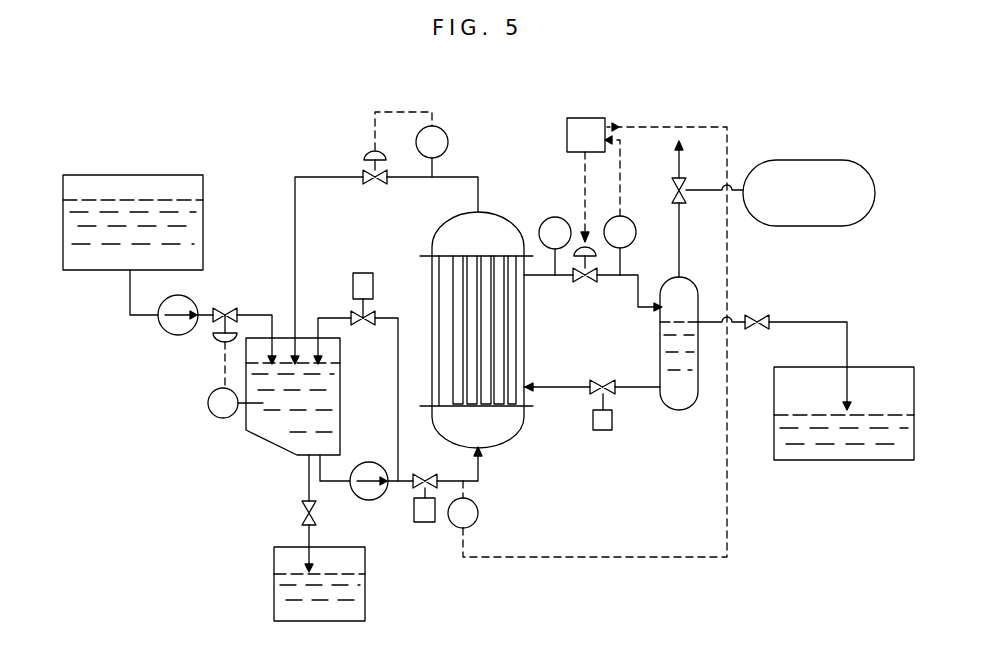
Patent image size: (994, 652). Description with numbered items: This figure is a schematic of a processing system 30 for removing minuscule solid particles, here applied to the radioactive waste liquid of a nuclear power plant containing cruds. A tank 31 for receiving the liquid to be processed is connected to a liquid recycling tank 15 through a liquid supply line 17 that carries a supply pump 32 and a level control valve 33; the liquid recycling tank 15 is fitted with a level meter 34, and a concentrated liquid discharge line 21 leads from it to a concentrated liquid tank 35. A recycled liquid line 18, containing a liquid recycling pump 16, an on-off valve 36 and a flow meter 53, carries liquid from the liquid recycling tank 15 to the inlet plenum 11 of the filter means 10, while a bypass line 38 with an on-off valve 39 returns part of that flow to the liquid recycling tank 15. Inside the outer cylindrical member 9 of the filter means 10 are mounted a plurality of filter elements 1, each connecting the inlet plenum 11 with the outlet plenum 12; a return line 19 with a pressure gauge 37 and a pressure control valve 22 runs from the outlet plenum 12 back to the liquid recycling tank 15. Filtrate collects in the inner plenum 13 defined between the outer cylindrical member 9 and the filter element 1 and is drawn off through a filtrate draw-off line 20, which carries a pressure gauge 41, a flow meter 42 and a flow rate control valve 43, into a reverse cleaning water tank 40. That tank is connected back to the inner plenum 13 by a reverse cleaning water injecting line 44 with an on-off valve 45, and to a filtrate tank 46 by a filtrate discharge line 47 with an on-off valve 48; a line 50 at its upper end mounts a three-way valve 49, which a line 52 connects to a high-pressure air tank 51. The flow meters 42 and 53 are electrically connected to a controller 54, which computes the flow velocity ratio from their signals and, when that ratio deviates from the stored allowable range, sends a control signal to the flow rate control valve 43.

The filter element 1 is at (509, 350).
The outer cylindrical member 9 is at (432, 288).
The filter means 10 is at (479, 311).
The inlet plenum 11 is at (507, 426).
The outlet plenum 12 is at (446, 238).
The inner plenum 13 is at (438, 330).
The liquid recycling tank 15 is at (272, 449).
The liquid recycling pump 16 is at (364, 500).
The liquid supply line 17 is at (146, 315).
The recycled liquid line 18 is at (478, 470).
The return line 19 is at (295, 197).
The filtrate draw-off line 20 is at (540, 278).
The concentrated liquid discharge line 21 is at (304, 512).
The pressure control valve 22 is at (366, 152).
The processing system 30 is at (489, 98).
The tank 31 is at (148, 175).
The supply pump 32 is at (180, 335).
The level control valve 33 is at (226, 310).
The level meter 34 is at (208, 403).
The concentrated liquid tank 35 is at (274, 578).
The on-off valve 36 is at (425, 522).
The pressure gauge 37 is at (448, 142).
The bypass line 38 is at (398, 426).
The on-off valve 39 is at (363, 273).
The reverse cleaning water tank 40 is at (696, 400).
The pressure gauge 41 is at (553, 217).
The flow meter 42 is at (640, 212).
The flow rate control valve 43 is at (582, 281).
The reverse cleaning water injecting line 44 is at (566, 388).
The on-off valve 45 is at (605, 431).
The filtrate tank 46 is at (814, 460).
The filtrate discharge line 47 is at (806, 322).
The on-off valve 48 is at (757, 314).
The three-way valve 49 is at (686, 182).
The line 50 is at (676, 172).
The high-pressure air tank 51 is at (797, 162).
The line 52 is at (706, 192).
The flow meter 53 is at (478, 513).
The controller 54 is at (567, 128).